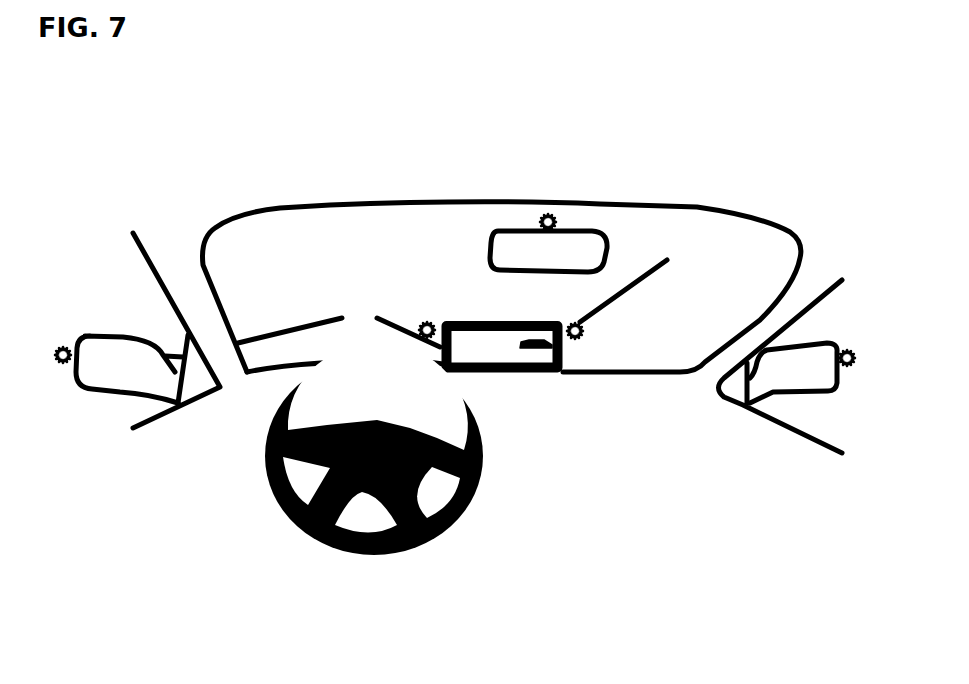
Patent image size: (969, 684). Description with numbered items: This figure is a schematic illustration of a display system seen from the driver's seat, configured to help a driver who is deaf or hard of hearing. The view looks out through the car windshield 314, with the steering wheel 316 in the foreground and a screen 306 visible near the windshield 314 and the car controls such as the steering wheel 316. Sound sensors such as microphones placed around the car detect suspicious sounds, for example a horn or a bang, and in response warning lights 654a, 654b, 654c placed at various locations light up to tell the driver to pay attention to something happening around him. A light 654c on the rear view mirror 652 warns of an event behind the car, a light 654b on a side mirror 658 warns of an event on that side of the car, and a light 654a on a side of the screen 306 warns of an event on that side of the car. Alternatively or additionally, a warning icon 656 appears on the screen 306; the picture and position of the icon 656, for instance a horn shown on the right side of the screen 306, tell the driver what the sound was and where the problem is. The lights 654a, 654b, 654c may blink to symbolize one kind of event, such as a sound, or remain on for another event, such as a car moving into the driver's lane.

The car windshield 314 is at (342, 250).
The rear view mirror 652 is at (503, 252).
The warning light 654c is at (552, 212).
The screen 306 is at (667, 260).
The warning icon 656 is at (530, 357).
The warning light 654a is at (578, 337).
The warning light 654b is at (63, 362).
The side mirror 658 is at (102, 353).
The steering wheel 316 is at (462, 512).